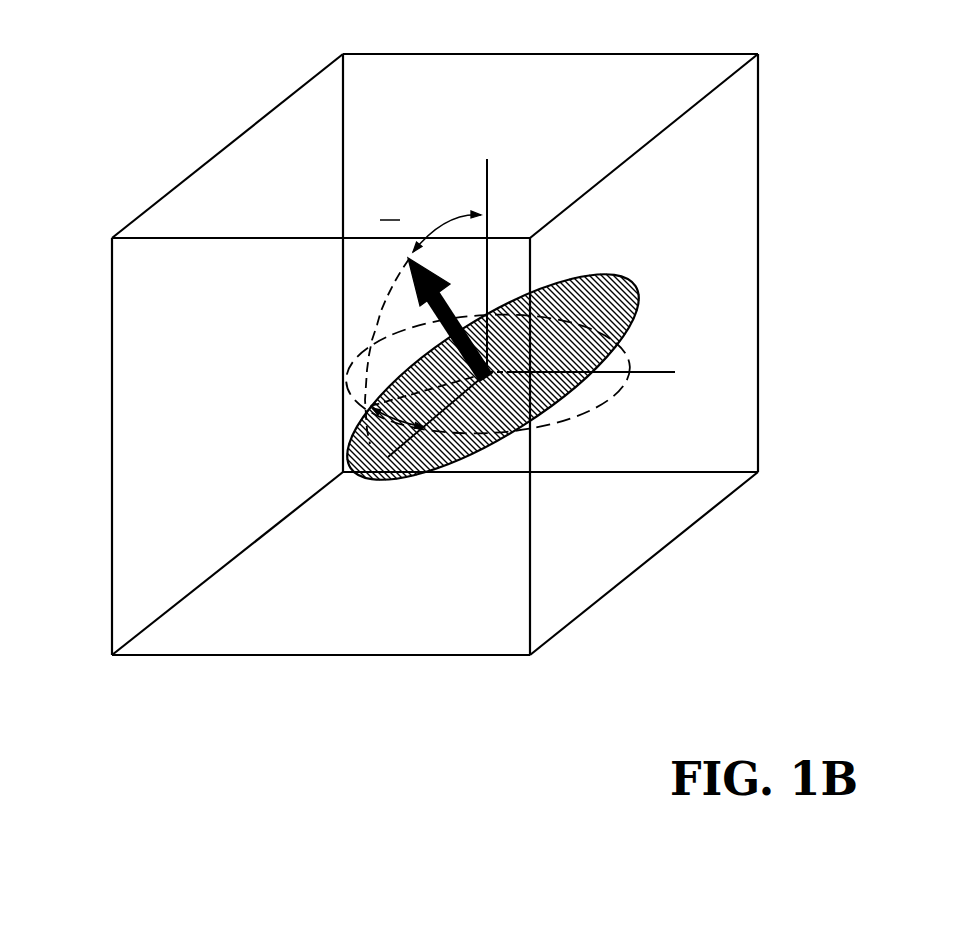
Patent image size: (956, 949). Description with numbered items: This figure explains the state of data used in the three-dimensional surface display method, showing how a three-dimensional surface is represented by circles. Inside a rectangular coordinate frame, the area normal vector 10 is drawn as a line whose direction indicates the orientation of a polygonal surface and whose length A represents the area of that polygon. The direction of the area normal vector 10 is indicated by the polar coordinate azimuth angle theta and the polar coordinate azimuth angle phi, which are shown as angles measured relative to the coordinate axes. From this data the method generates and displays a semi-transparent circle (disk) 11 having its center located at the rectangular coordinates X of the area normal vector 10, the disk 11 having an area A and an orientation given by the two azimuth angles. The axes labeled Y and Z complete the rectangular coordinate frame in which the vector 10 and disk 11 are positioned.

The area normal vector 10 is at (440, 290).
The semi-transparent circle (disk) 11 is at (637, 292).
The rectangular coordinates X is at (321, 670).
The Y axis Y is at (227, 563).
The Z axis Z is at (100, 446).